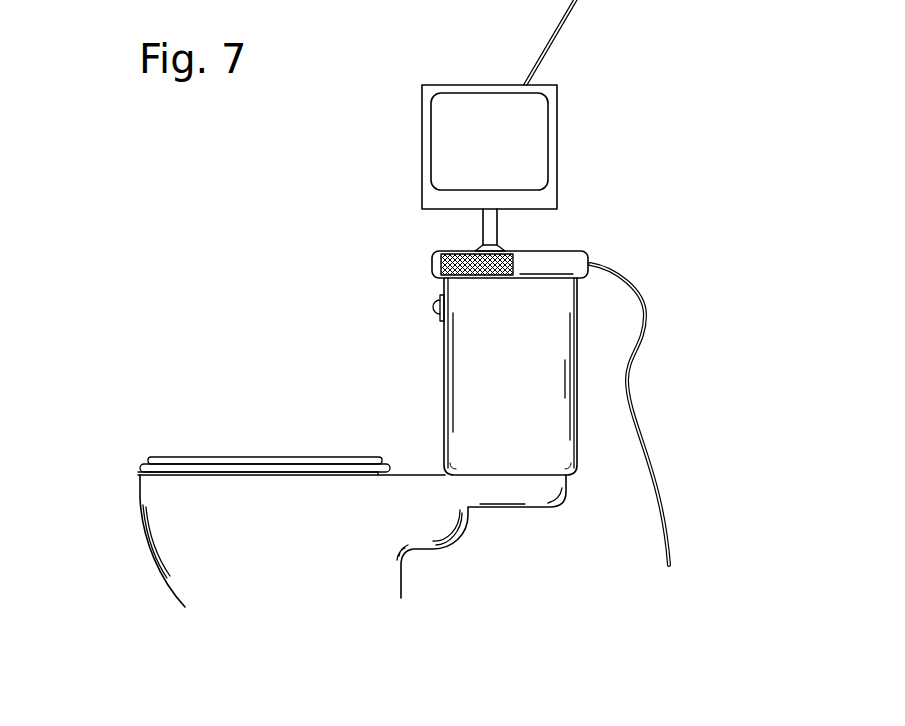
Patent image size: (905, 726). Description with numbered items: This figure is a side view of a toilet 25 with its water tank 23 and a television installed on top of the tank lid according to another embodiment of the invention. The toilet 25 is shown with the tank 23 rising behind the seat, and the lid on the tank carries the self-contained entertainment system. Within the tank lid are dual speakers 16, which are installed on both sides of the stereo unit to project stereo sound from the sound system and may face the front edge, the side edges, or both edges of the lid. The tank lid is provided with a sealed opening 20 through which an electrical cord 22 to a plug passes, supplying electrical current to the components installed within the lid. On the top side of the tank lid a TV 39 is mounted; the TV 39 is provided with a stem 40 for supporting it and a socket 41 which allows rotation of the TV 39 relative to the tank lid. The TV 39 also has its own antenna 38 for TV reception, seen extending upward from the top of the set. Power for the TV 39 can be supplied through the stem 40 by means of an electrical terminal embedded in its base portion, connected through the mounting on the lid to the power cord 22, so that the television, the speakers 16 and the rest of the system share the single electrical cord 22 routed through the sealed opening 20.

The speakers 16 is at (442, 263).
The sealed opening 20 is at (535, 358).
The electrical cord 22 is at (630, 380).
The tank 23 is at (445, 378).
The toilet 25 is at (150, 537).
The antenna 38 is at (553, 30).
The TV 39 is at (445, 136).
The stem 40 is at (487, 221).
The socket 41 is at (505, 249).